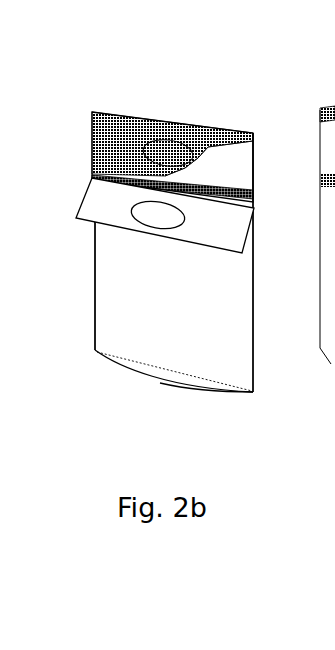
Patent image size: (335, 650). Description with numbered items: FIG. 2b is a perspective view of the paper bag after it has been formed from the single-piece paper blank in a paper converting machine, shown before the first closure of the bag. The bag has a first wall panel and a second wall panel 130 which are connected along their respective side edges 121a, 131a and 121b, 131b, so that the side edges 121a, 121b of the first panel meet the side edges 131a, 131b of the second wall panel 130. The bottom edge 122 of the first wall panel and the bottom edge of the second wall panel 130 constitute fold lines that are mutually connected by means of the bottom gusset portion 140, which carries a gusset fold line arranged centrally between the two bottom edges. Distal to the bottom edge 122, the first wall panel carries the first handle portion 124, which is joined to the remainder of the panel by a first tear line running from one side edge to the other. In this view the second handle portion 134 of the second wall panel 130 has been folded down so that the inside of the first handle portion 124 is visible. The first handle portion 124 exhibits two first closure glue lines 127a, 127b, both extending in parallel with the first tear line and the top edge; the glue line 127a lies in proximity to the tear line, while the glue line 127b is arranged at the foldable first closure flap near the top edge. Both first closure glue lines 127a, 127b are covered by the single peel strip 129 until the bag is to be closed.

The side edge 121a is at (64, 286).
The side edge 121b is at (286, 262).
The side edge 131a is at (95, 310).
The side edge 131b is at (253, 350).
The bottom edge 122 is at (132, 372).
The second wall panel portion 130 is at (103, 337).
The gusset bottom portion 140 is at (185, 395).
The peel strip 129 is at (97, 128).
The first closure glue line 127a is at (248, 195).
The first closure glue line 127b is at (248, 135).
The first handle portion 124 is at (253, 167).
The second handle portion 134 is at (83, 200).